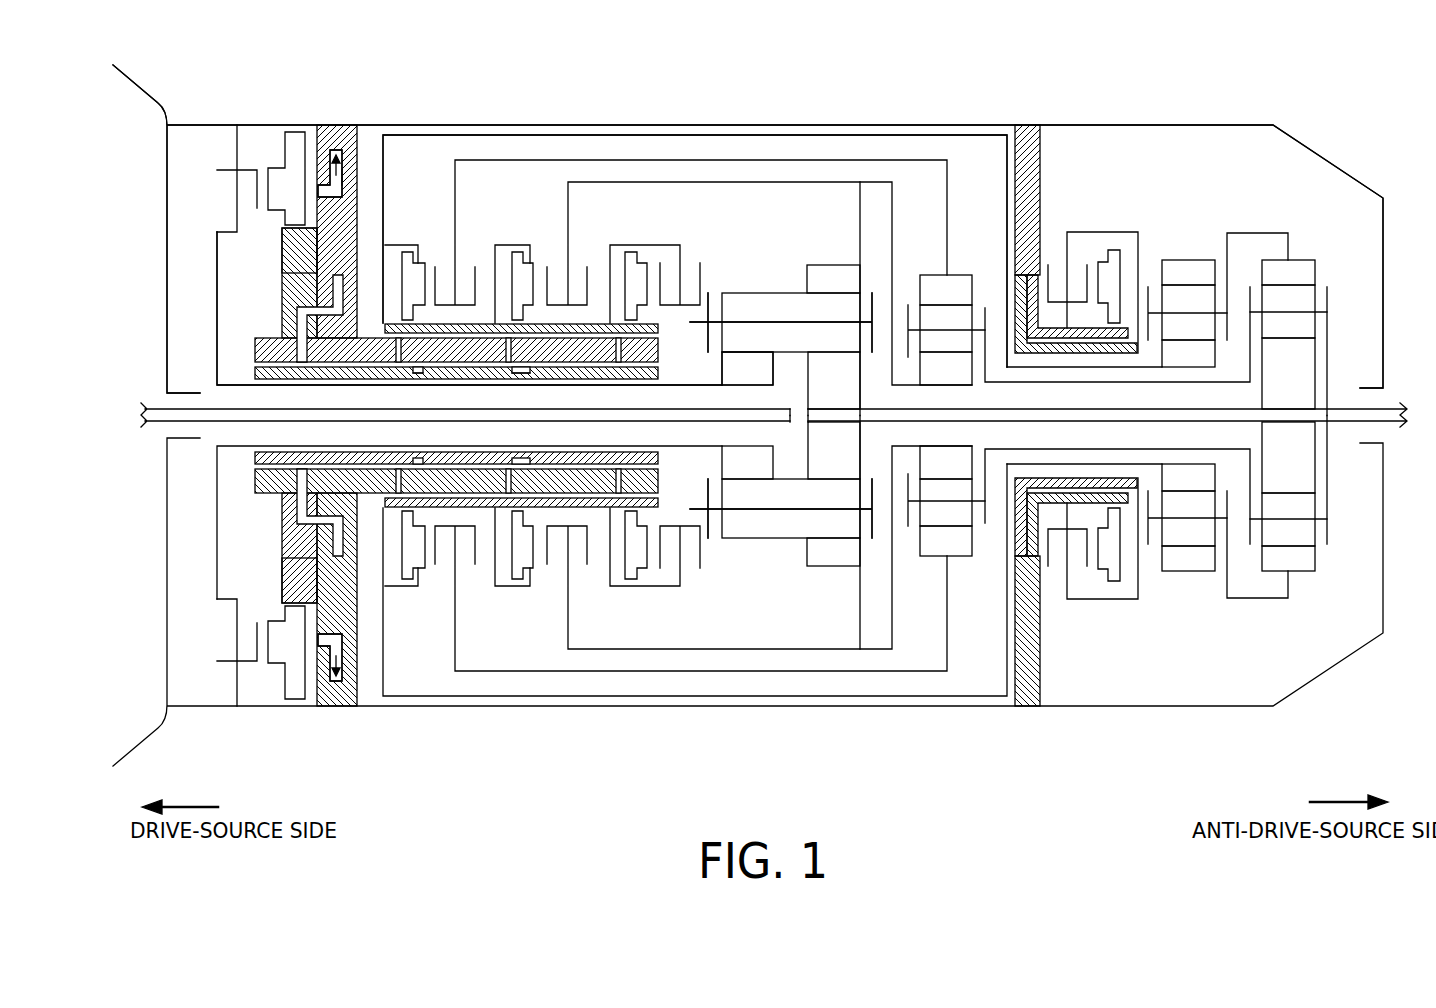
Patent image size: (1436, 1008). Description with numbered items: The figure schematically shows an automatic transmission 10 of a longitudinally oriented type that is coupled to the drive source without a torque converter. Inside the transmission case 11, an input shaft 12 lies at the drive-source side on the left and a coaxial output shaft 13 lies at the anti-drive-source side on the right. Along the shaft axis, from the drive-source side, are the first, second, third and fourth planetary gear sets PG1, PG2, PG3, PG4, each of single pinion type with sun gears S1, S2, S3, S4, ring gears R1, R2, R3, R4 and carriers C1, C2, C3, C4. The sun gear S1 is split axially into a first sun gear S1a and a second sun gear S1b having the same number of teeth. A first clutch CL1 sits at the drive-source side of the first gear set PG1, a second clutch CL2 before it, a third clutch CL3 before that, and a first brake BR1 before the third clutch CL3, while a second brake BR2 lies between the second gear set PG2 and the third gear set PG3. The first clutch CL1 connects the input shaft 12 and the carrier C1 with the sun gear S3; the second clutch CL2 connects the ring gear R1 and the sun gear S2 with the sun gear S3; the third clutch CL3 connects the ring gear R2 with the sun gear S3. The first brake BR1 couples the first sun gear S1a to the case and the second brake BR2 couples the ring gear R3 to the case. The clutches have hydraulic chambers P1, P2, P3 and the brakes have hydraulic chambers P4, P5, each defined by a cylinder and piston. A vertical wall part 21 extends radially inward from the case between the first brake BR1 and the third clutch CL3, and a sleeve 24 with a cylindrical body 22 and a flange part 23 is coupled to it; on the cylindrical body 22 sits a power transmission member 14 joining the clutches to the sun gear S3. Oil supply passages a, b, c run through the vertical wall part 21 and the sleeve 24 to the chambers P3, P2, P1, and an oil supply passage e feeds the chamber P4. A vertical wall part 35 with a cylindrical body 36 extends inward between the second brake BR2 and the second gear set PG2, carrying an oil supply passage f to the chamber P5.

The automatic transmission 10 is at (1359, 91).
The transmission case 11 is at (908, 121).
The input shaft 12 is at (146, 406).
The output shaft 13 is at (1387, 396).
The power transmission member 14 is at (662, 329).
The vertical wall part 21 is at (357, 157).
The cylindrical body 22 is at (268, 370).
The flange part 23 is at (281, 290).
The sleeve 24 is at (276, 262).
The vertical wall part 35 is at (1038, 135).
The cylindrical body 36 is at (1140, 350).
The first brake BR1 is at (203, 194).
The second brake BR2 is at (1053, 239).
The hydraulic chamber P1 is at (606, 262).
The hydraulic chamber P2 is at (493, 262).
The hydraulic chamber P3 is at (393, 262).
The hydraulic chamber P4 is at (327, 146).
The hydraulic chamber P5 is at (1121, 248).
The first clutch CL1 is at (699, 250).
The second clutch CL2 is at (558, 242).
The third clutch CL3 is at (450, 240).
The first planetary gear set PG1 is at (823, 258).
The second planetary gear set PG2 is at (961, 265).
The third planetary gear set PG3 is at (1196, 254).
The fourth planetary gear set PG4 is at (1303, 254).
The ring gear R1 is at (833, 415).
The ring gear R2 is at (946, 415).
The ring gear R3 is at (1188, 415).
The ring gear R4 is at (1288, 415).
The sun gear S1 is at (716, 373).
The first sun gear S1a is at (747, 415).
The second sun gear S1b is at (825, 415).
The sun gear S2 is at (946, 415).
The sun gear S3 is at (1188, 415).
The sun gear S4 is at (1288, 415).
The carrier C1 is at (790, 415).
The carrier C2 is at (1115, 412).
The carrier C3 is at (1254, 415).
The carrier C4 is at (1332, 403).
The oil supply passage a is at (308, 380).
The oil supply passage b is at (450, 378).
The oil supply passage c is at (575, 378).
The oil supply passage e is at (355, 176).
The oil supply passage f is at (1090, 372).